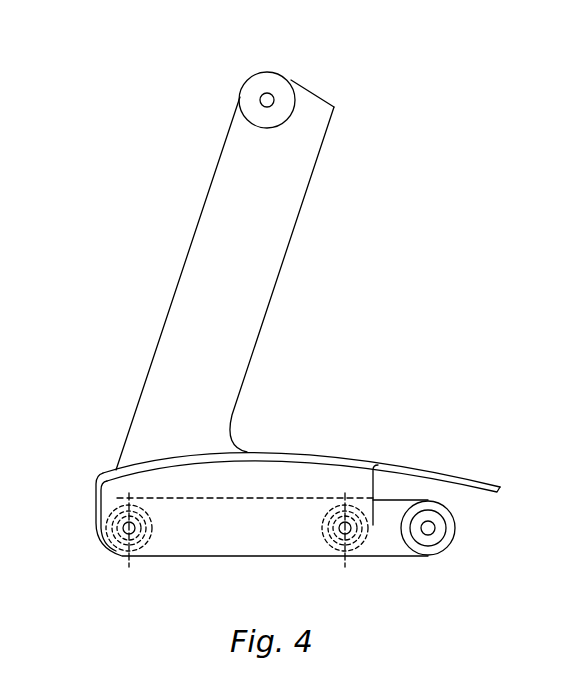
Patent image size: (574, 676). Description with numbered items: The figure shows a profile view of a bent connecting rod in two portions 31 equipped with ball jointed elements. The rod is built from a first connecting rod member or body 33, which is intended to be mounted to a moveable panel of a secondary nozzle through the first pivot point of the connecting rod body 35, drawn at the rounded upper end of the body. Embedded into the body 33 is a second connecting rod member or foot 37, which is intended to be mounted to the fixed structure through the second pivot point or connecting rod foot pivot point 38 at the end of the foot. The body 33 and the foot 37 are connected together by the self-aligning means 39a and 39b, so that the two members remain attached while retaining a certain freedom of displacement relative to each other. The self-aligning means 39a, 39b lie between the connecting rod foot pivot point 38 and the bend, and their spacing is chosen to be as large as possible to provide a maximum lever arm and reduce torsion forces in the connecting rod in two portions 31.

The bent connecting rod in two portions 31 is at (133, 245).
The first connecting rod member or body 33 is at (212, 180).
The first pivot point or pivot point of the connecting rod body 35 is at (271, 96).
The second connecting rod member or foot 37 is at (388, 498).
The second pivot point or connecting rod foot pivot point 38 is at (433, 525).
The self-aligning means 39a is at (118, 542).
The self-aligning means 39b is at (334, 543).